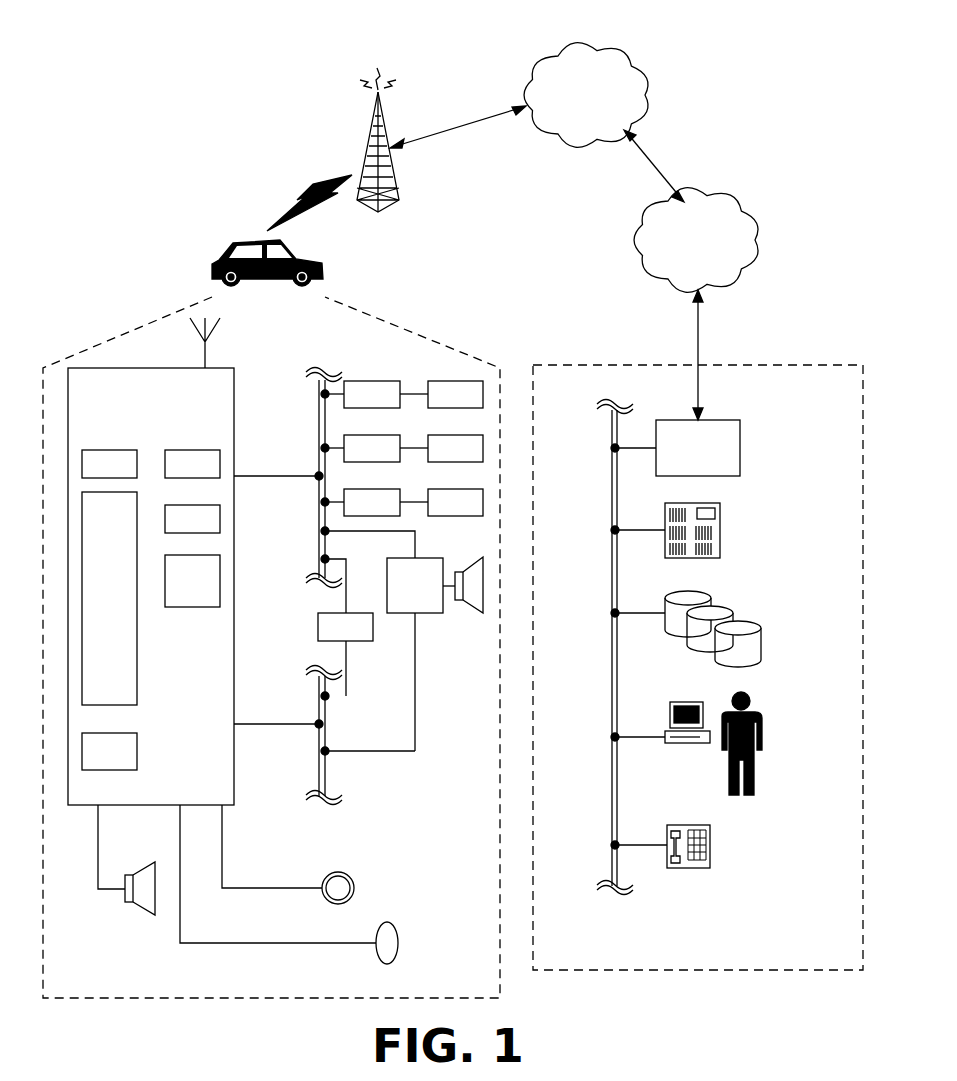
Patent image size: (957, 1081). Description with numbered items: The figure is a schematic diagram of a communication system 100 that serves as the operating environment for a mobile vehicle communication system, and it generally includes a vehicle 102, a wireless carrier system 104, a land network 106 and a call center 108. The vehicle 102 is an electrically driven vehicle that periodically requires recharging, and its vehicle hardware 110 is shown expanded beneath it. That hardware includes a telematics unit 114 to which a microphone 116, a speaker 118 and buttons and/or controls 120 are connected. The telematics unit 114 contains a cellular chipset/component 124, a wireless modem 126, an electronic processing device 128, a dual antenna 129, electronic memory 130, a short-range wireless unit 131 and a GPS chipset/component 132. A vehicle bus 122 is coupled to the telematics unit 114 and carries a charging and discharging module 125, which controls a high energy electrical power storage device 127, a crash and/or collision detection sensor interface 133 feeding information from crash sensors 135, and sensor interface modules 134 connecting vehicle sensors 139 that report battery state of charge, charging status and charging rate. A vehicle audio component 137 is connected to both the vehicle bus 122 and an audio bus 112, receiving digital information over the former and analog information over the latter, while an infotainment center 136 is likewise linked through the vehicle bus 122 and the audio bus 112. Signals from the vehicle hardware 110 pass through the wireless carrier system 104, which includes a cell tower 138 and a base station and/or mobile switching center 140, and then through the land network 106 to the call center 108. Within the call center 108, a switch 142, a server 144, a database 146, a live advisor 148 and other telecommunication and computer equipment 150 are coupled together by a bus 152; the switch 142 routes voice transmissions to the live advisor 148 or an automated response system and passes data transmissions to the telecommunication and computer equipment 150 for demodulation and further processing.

The communication system 100 is at (424, 35).
The vehicle 102 is at (216, 258).
The wireless carrier system 104 is at (500, 200).
The land network 106 is at (696, 240).
The call center 108 is at (702, 972).
The vehicle hardware 110 is at (237, 1000).
The audio bus 112 is at (318, 770).
The telematics unit 114 is at (234, 668).
The microphone 116 is at (389, 922).
The speaker 118 is at (137, 910).
The buttons and/or controls 120 is at (334, 872).
The vehicle bus 122 is at (318, 516).
The cellular chipset/component 124 is at (109, 464).
The charging and discharging module 125 is at (362, 502).
The wireless modem 126 is at (192, 464).
The high energy electrical power storage device 127 is at (441, 502).
The electronic processing device 128 is at (109, 598).
The dual antenna 129 is at (206, 360).
The electronic memory 130 is at (109, 751).
The short-range wireless unit 131 is at (192, 581).
The GPS chipset/component 132 is at (192, 519).
The crash and/or collision detection sensor interface 133 is at (362, 394).
The sensor interface modules 134 is at (362, 448).
The crash sensors 135 is at (441, 394).
The infotainment center 136 is at (345, 627).
The vehicle audio component 137 is at (404, 641).
The cell tower 138 is at (385, 112).
The vehicle sensors 139 is at (441, 448).
The base station and/or mobile switching center 140 is at (586, 95).
The switch 142 is at (677, 448).
The server 144 is at (722, 507).
The database 146 is at (735, 617).
The live advisor 148 is at (757, 713).
The telecommunication and computer equipment 150 is at (712, 840).
The bus 152 is at (611, 666).